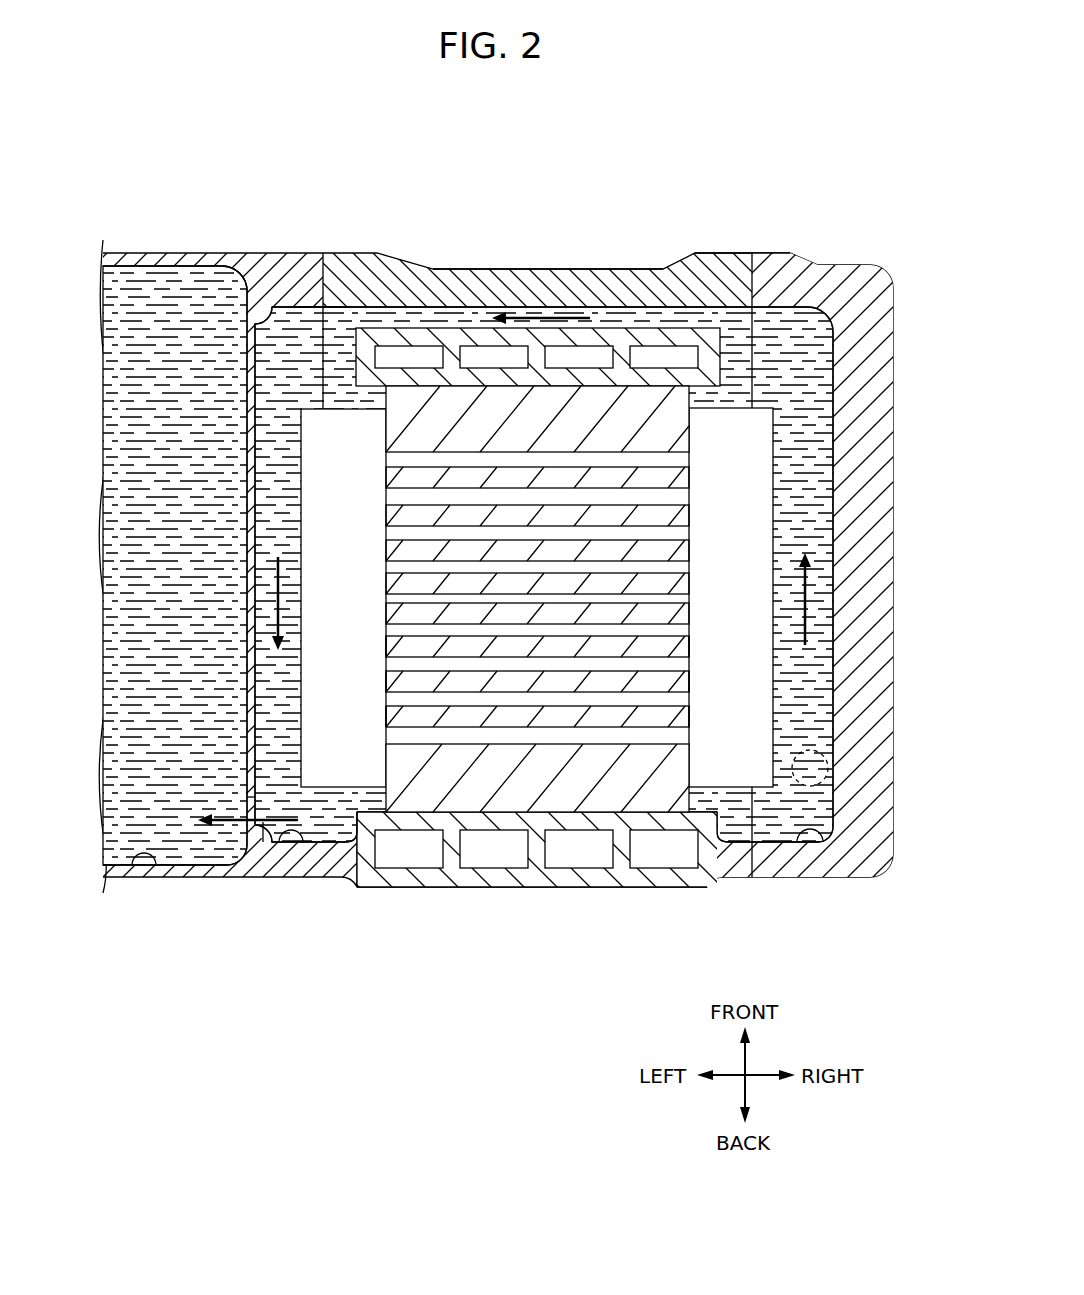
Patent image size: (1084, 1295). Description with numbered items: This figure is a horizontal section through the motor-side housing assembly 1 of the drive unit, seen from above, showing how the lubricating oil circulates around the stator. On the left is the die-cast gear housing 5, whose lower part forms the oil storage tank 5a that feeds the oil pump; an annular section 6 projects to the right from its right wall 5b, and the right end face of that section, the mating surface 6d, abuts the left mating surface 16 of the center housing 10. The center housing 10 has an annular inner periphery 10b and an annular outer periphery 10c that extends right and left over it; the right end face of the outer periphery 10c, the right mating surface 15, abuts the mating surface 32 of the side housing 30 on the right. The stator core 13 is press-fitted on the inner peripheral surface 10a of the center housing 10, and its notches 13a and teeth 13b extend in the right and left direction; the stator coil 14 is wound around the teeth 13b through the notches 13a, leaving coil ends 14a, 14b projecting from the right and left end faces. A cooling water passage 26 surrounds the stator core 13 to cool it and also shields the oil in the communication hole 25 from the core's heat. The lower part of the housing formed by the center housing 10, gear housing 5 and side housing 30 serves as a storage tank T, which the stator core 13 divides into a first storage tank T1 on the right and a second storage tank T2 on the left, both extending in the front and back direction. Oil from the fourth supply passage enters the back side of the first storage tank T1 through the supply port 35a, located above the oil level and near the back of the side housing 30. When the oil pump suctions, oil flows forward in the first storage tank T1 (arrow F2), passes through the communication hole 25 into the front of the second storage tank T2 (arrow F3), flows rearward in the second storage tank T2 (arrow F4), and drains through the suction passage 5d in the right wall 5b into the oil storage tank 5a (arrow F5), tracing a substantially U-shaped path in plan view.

The cooler 1 is at (509, 542).
The gear housing 5 is at (120, 253).
The oil storage tank 5a is at (156, 855).
The right wall 5b is at (228, 349).
The suction passage 5d is at (247, 828).
The annular section 6 is at (298, 258).
The mating surface 6d is at (325, 300).
The center housing 10 is at (537, 900).
The inner peripheral surface 10a is at (668, 384).
The inner periphery 10b is at (538, 301).
The outer periphery 10c is at (447, 298).
The stator core 13 is at (539, 707).
The notches 13a is at (721, 697).
The teeth 13b is at (386, 717).
The stator coil 14 is at (407, 745).
The coil end 14a is at (761, 775).
The coil end 14b is at (338, 770).
The right mating surface 15 is at (767, 297).
The left mating surface 16 is at (323, 253).
The communication hole 25 is at (613, 317).
The cooling water passage 26 is at (646, 868).
The side housing 30 is at (833, 264).
The mating surface 32 is at (750, 297).
The supply port 35a is at (835, 785).
The storage tank T is at (564, 885).
The first storage tank T1 is at (823, 846).
The second storage tank T2 is at (266, 846).
The arrow F2 is at (795, 600).
The arrow F3 is at (573, 305).
The arrow F4 is at (296, 585).
The arrow F5 is at (265, 850).